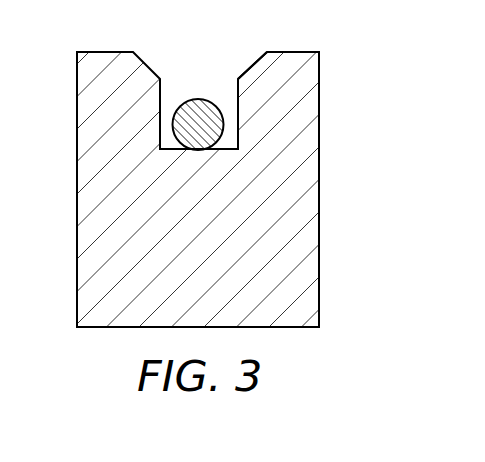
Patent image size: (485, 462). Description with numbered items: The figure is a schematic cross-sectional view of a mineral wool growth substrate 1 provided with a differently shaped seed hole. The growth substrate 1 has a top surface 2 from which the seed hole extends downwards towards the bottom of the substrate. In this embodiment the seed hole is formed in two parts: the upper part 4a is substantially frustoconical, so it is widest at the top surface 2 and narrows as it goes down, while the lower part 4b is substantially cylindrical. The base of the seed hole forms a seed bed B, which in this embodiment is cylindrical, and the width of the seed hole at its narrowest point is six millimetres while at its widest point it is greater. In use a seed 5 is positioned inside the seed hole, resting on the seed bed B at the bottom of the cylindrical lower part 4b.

The growth substrate 1 is at (79, 126).
The top surface 2 is at (102, 51).
The upper part of seed hole 4a is at (242, 57).
The lower part of seed hole 4b is at (238, 134).
The seed 5 is at (198, 99).
The seed bed B is at (168, 151).